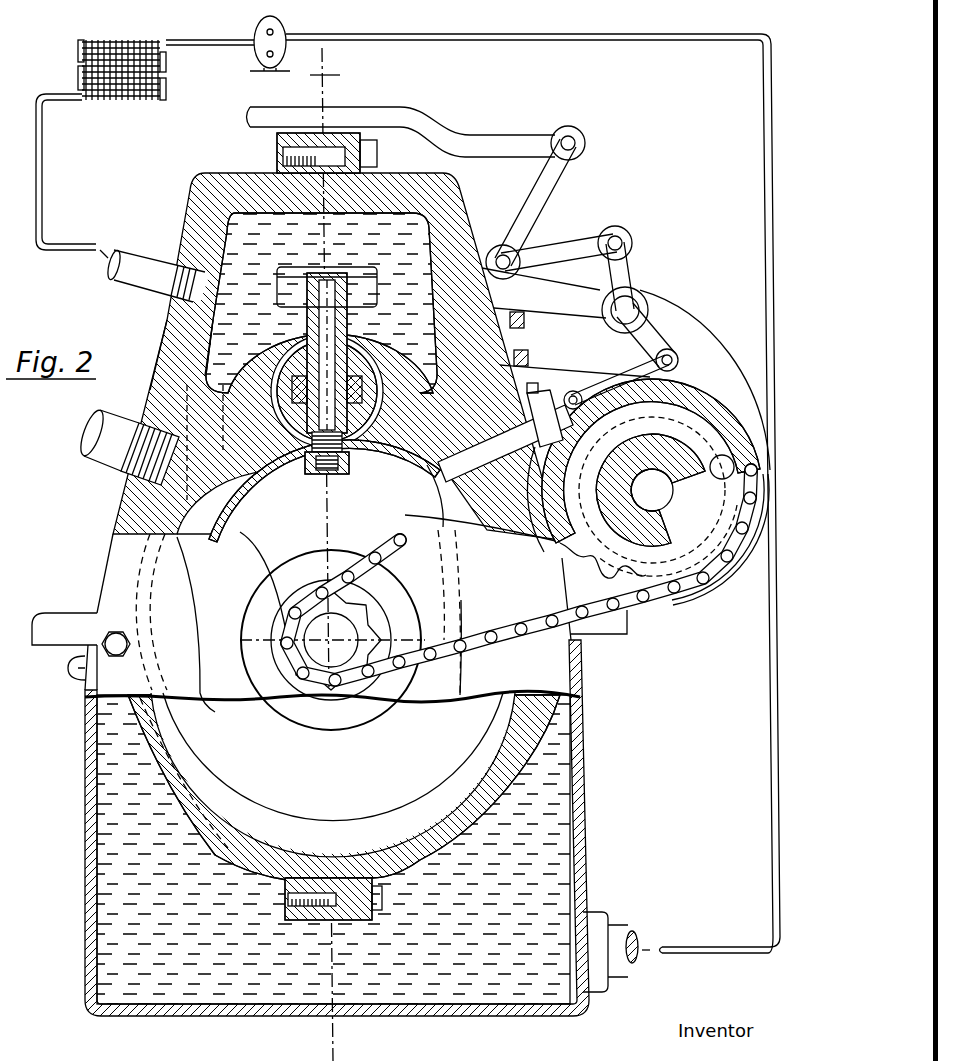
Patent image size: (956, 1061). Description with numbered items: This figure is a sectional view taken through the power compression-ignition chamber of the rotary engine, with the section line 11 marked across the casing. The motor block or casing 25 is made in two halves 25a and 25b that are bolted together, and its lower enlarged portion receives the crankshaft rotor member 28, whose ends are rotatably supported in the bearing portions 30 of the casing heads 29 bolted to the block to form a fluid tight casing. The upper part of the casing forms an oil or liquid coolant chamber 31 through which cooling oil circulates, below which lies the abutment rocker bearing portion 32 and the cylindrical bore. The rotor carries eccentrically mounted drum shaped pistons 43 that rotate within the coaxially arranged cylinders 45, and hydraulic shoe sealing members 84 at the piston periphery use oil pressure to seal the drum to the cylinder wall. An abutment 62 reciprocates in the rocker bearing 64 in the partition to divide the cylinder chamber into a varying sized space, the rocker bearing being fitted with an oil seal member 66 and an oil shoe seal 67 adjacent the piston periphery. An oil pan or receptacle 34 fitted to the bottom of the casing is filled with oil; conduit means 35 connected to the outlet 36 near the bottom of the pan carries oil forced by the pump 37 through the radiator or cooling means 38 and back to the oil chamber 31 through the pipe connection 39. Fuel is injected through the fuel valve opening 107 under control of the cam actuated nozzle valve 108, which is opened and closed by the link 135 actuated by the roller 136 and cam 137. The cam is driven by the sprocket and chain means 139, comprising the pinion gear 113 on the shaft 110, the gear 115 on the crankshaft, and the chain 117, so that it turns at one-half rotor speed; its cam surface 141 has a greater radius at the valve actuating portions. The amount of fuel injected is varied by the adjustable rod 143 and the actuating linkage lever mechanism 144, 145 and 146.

The section line 11- 11 is at (348, 74).
The motor block or casing 25 is at (458, 202).
The casing half 25a is at (163, 330).
The casing half 25b is at (500, 306).
The crankshaft rotor member 28 is at (372, 511).
The casing heads 29 is at (100, 590).
The bearing portions 30 is at (275, 576).
The oil or liquid coolant chamber 31 is at (405, 227).
The abutment rocker bearing portion 32 is at (162, 348).
The oil pan or receptacle 34 is at (584, 840).
The conduit means 35 is at (633, 927).
The outlet 36 is at (598, 916).
The pump 37 is at (278, 32).
The radiator or cooling means 38 is at (158, 68).
The pipe connection 39 is at (145, 278).
The drum shaped pistons 43 is at (230, 516).
The cylinders 45 is at (398, 810).
The abutment 62 is at (346, 325).
The rocker bearing 64 is at (364, 385).
The oil seal member 66 is at (360, 392).
The oil shoe seal 67 is at (342, 466).
The hydraulic shoe sealing members 84 is at (326, 466).
The fuel valve opening 107 is at (436, 500).
The nozzle valve 108 is at (473, 474).
The shaft 110 is at (660, 500).
The pinion gear 113 is at (620, 586).
The gear 115 is at (374, 620).
The belt or chain 117 is at (636, 606).
The link 135 is at (698, 380).
The roller 136 is at (720, 452).
The cam 137 is at (718, 414).
The sprocket and chain means 139 is at (684, 600).
The cam surface 141 is at (632, 447).
The adjustable rod 143 is at (590, 393).
The actuating linkage lever mechanism 144 is at (645, 283).
The actuating linkage lever mechanism 145 is at (578, 237).
The actuating linkage lever mechanism 146 is at (458, 133).